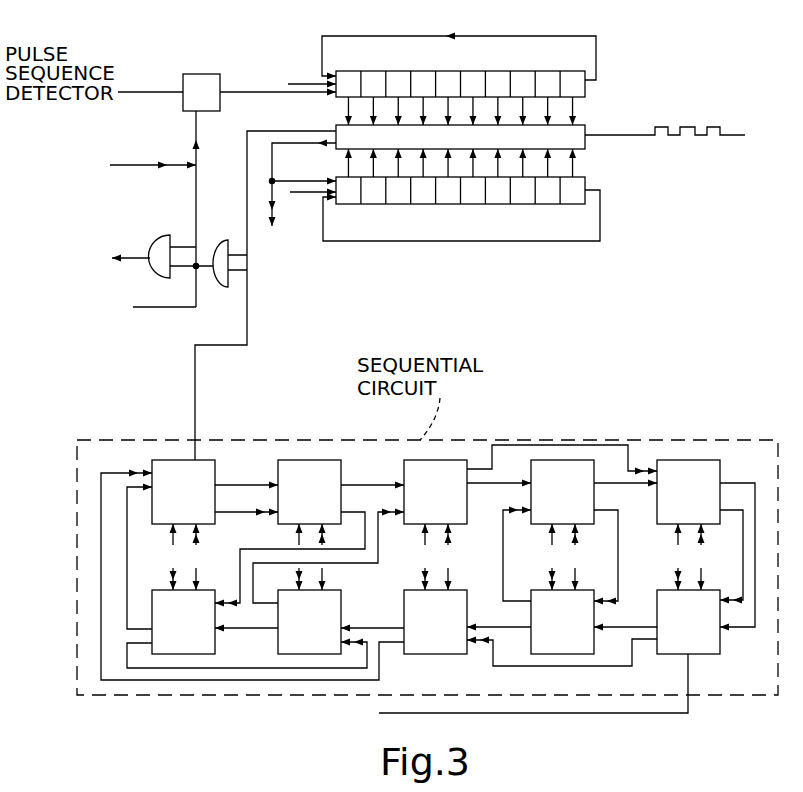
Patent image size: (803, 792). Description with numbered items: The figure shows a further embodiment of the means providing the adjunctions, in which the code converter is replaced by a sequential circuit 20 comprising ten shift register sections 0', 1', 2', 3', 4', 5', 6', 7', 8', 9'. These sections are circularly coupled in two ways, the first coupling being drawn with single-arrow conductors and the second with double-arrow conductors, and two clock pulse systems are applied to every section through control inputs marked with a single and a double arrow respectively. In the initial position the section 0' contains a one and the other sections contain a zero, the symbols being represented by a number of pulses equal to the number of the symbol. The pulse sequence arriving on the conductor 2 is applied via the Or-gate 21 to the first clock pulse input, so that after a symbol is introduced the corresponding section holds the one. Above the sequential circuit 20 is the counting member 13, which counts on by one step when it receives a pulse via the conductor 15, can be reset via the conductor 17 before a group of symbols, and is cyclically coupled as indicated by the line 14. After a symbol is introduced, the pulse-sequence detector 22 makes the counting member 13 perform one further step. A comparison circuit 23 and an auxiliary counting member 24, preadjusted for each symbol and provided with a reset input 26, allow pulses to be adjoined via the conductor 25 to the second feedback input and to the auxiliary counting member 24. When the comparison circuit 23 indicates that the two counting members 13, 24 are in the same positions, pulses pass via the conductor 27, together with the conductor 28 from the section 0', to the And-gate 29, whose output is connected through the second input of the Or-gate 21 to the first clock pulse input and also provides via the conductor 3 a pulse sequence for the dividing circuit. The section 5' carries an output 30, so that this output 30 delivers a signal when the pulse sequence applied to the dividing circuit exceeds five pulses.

The conductor 2 is at (153, 150).
The conductor 3 is at (163, 290).
The counting member 13 is at (575, 82).
The line 14 is at (487, 36).
The conductor 15 is at (272, 92).
The conductor 17 is at (310, 84).
The sequential circuit 20 is at (603, 438).
The Or-gate 21 is at (158, 241).
The pulse-sequence detector 22 is at (196, 74).
The comparison circuit 23 is at (577, 135).
The auxiliary counting member 24 is at (590, 193).
The conductor 25 is at (272, 178).
The reset input 26 is at (317, 192).
The conductor 27 is at (277, 131).
The conductor 28 is at (248, 285).
The And-gate 29 is at (219, 249).
The output 30 is at (688, 668).
The shift register section 0' is at (204, 484).
The shift register section 1' is at (329, 483).
The shift register section 2' is at (446, 483).
The shift register section 3' is at (574, 486).
The shift register section 4' is at (704, 486).
The shift register section 5' is at (697, 607).
The shift register section 6' is at (570, 607).
The shift register section 7' is at (445, 610).
The shift register section 8' is at (322, 610).
The shift register section 9' is at (195, 607).